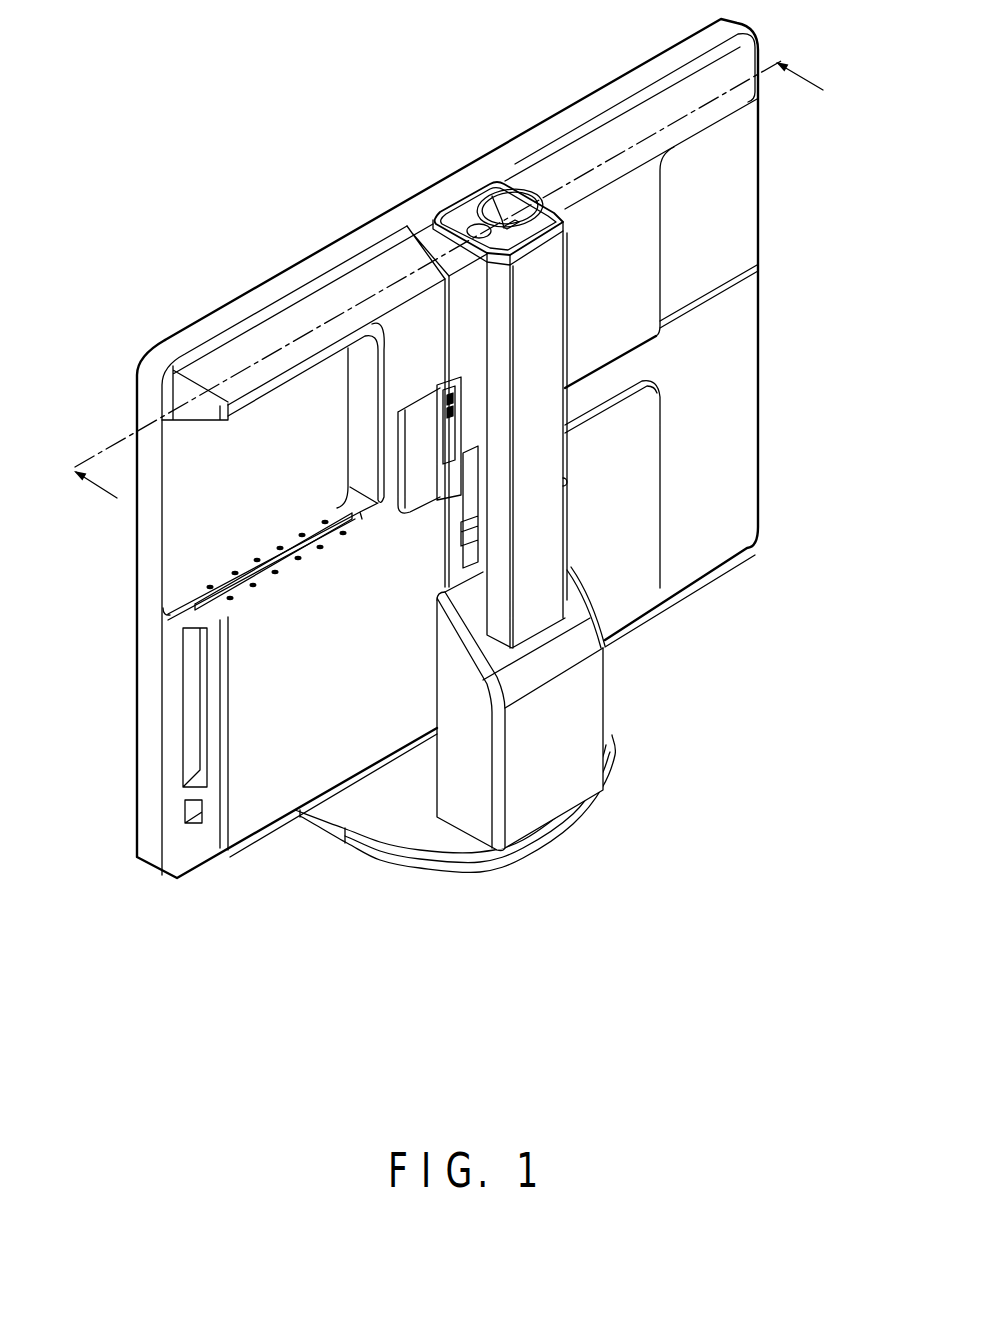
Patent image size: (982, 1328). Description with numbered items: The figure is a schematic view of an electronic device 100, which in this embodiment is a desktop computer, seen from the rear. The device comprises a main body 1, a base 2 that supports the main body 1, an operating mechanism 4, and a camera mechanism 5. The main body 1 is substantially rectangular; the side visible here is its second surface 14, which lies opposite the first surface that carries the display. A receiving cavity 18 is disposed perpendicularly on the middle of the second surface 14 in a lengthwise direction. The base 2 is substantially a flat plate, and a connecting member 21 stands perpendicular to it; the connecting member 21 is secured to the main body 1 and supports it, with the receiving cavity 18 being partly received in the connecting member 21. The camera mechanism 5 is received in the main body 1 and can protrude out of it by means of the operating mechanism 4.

The electronic device 100 is at (290, 160).
The main body 1 is at (625, 88).
The base 2 is at (400, 803).
The operating mechanism 4 is at (445, 463).
The camera mechanism 5 is at (455, 194).
The second surface 14 is at (727, 182).
The receiving cavity 18 is at (532, 540).
The connecting member 21 is at (573, 730).